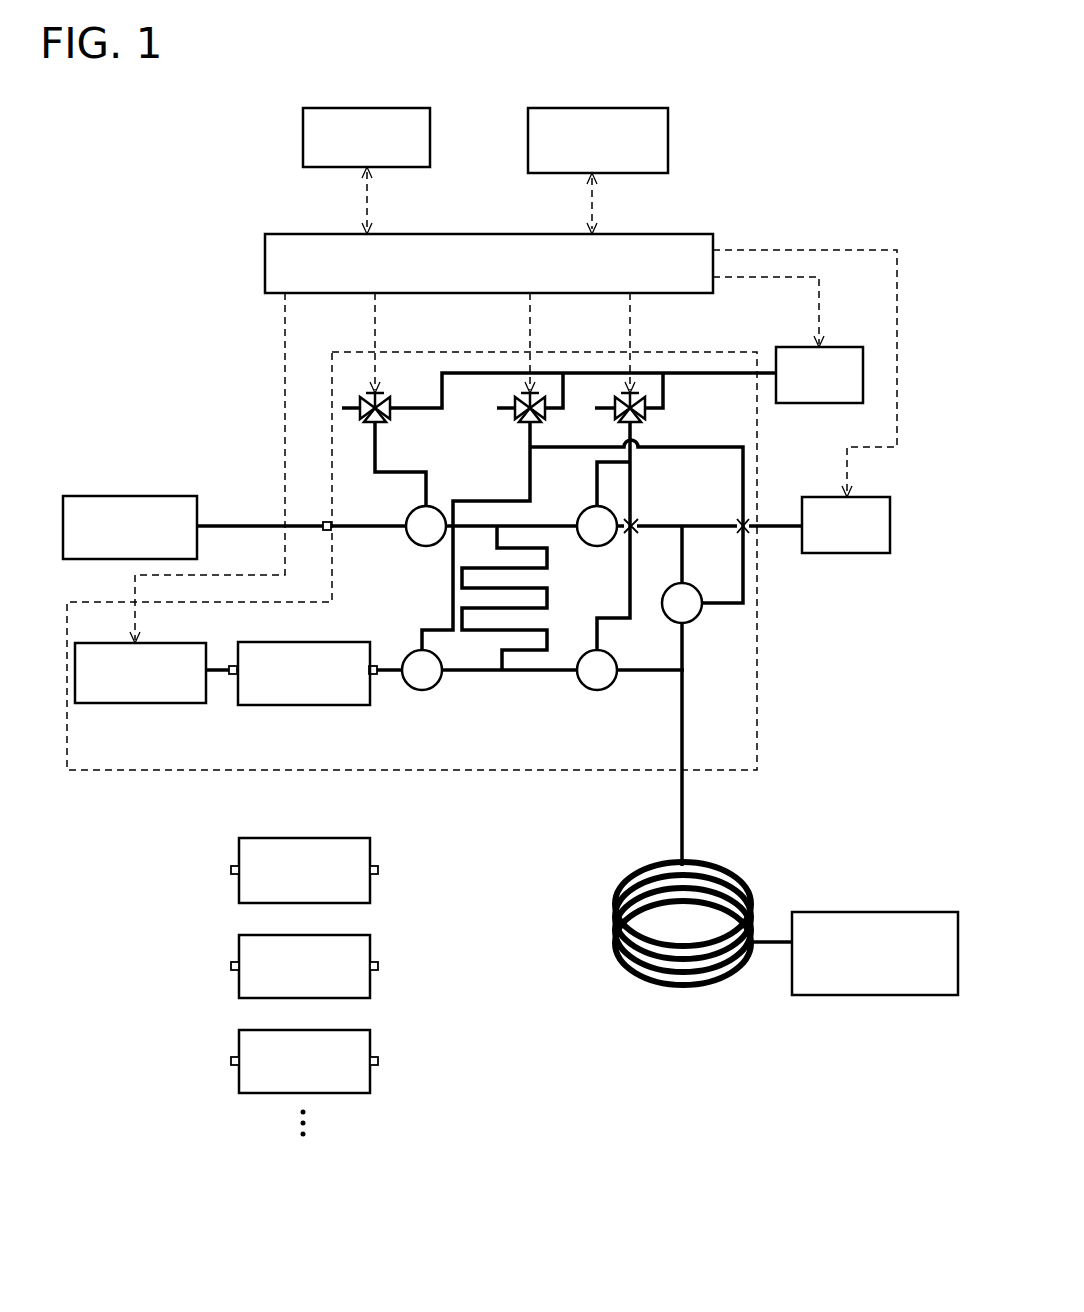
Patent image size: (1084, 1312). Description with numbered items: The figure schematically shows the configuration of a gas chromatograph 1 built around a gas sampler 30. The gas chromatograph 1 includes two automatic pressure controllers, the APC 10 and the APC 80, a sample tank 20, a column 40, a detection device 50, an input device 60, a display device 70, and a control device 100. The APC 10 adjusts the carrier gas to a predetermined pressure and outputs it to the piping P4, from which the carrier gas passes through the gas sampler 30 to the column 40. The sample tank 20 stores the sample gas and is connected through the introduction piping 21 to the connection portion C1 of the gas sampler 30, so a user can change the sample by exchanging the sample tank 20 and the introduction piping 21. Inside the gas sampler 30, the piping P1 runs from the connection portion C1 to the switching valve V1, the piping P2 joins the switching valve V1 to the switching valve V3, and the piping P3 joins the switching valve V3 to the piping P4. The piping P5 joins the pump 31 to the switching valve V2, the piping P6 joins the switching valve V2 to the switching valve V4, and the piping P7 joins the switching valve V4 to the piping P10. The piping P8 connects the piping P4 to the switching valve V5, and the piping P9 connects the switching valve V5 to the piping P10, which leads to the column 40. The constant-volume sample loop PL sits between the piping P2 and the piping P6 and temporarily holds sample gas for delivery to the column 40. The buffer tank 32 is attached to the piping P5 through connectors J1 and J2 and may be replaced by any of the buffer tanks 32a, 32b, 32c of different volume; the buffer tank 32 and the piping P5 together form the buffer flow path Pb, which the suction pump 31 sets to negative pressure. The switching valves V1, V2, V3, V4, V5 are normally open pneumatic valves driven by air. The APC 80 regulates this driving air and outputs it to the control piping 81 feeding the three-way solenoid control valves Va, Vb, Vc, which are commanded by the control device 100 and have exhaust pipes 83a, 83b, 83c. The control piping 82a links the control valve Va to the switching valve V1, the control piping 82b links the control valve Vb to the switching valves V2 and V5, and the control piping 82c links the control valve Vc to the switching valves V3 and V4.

The gas chromatograph 1 is at (490, 98).
The APC 10 is at (858, 497).
The sample tank 20 is at (127, 496).
The introduction piping 21 is at (250, 522).
The gas sampler 30 is at (705, 353).
The pump 31 is at (155, 643).
The buffer tank 32 is at (290, 642).
The buffer tank 32a is at (318, 838).
The buffer tank 32b is at (318, 935).
The buffer tank 32c is at (318, 1030).
The column 40 is at (738, 875).
The detection device 50 is at (858, 912).
The input device 60 is at (398, 108).
The display device 70 is at (618, 108).
The APC 80 is at (830, 347).
The control piping 81 is at (703, 376).
The control piping 82a is at (378, 428).
The control piping 82b is at (527, 438).
The control piping 82c is at (633, 430).
The exhaust pipe 83a is at (352, 405).
The exhaust pipe 83b is at (503, 408).
The exhaust pipe 83c is at (610, 408).
The control device 100 is at (665, 234).
The control valve Va is at (388, 393).
The control valve Vb is at (543, 393).
The control valve Vc is at (643, 393).
The switching valve V1 is at (426, 548).
The switching valve V2 is at (410, 653).
The switching valve V3 is at (604, 546).
The switching valve V4 is at (608, 655).
The switching valve V5 is at (668, 587).
The connection portion C1 is at (324, 534).
The connector J1 is at (233, 662).
The connector J2 is at (373, 662).
The piping P1 is at (360, 534).
The piping P2 is at (518, 522).
The piping P3 is at (662, 522).
The piping P4 is at (781, 522).
The piping P5 is at (392, 675).
The piping P6 is at (520, 674).
The piping P7 is at (620, 674).
The piping P8 is at (686, 552).
The piping P9 is at (686, 644).
The piping P10 is at (686, 737).
The sample loop PL is at (550, 596).
The buffer flow path Pb is at (400, 722).